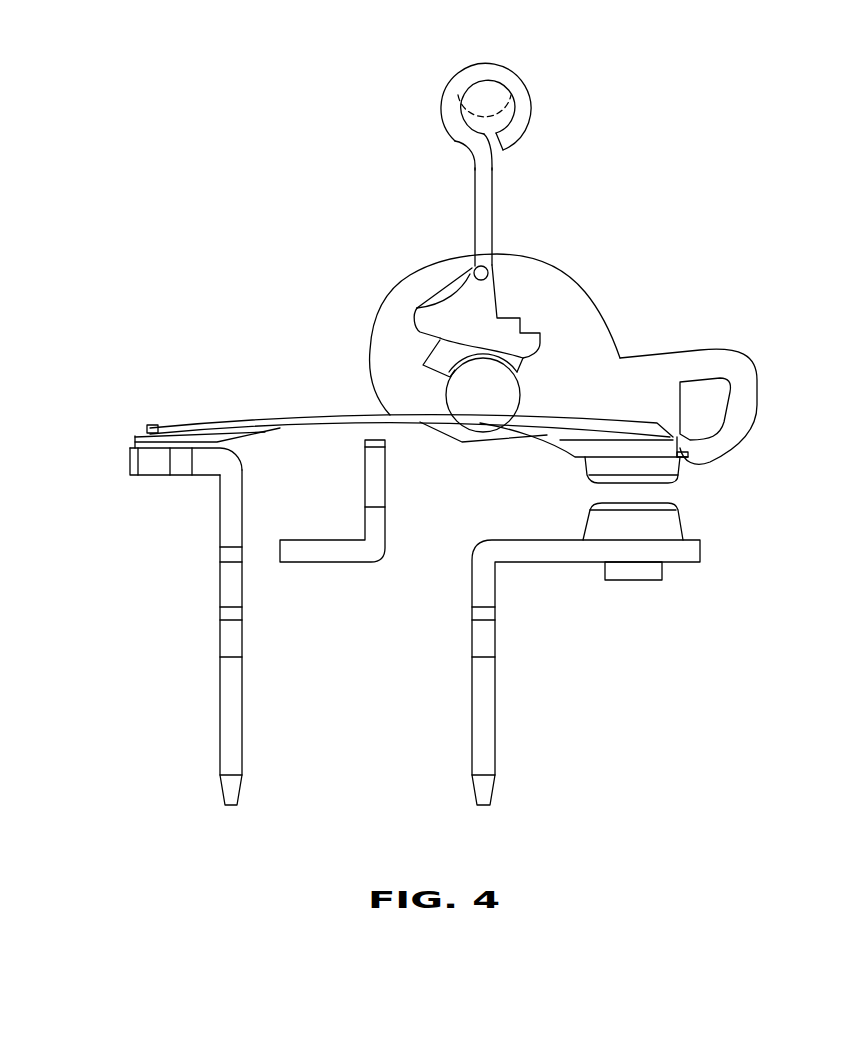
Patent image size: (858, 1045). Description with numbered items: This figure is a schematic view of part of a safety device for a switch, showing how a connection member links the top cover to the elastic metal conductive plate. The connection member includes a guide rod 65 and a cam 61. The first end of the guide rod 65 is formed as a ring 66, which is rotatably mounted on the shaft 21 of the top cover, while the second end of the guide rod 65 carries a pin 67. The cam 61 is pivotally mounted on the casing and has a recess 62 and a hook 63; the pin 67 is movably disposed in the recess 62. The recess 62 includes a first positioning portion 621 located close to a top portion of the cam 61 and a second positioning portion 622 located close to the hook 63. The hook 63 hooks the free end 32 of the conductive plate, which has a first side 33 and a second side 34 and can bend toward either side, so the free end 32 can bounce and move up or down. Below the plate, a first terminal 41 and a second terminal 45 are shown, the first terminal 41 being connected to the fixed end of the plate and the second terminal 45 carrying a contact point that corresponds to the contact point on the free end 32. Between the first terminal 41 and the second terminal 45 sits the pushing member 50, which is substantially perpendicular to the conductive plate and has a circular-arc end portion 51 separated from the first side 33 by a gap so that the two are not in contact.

The shaft 21 is at (513, 107).
The ring 66 is at (448, 98).
The guide rod 65 is at (480, 193).
The pin 67 is at (473, 254).
The cam 61 is at (573, 300).
The recess 62 is at (374, 321).
The first positioning portion 621 is at (417, 308).
The second positioning portion 622 is at (425, 335).
The hook 63 is at (723, 443).
The second side 34 is at (238, 420).
The free end 32 is at (683, 458).
The first side 33 is at (264, 425).
The end portion 51 is at (373, 450).
The pushing member 50 is at (245, 565).
The first terminal 41 is at (235, 710).
The second terminal 45 is at (483, 727).